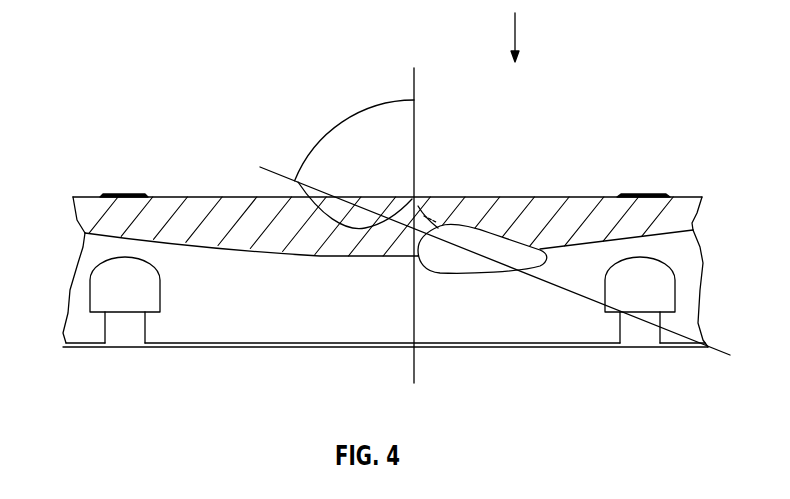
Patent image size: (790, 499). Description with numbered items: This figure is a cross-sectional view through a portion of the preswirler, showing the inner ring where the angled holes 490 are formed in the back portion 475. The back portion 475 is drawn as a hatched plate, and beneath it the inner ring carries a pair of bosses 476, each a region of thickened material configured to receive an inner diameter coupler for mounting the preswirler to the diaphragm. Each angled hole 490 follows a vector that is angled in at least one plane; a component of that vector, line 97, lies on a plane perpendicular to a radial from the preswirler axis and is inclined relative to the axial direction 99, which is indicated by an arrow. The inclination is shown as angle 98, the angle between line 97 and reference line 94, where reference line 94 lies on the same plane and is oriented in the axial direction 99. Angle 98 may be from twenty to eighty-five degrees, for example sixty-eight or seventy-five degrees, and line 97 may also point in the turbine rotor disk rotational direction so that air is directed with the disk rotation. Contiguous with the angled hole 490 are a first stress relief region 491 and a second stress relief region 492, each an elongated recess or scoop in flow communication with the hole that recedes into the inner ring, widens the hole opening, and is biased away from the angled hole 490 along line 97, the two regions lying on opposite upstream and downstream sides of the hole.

The reference line 94 is at (416, 82).
The line 97 is at (277, 170).
The angle 98 is at (343, 120).
The axial direction 99 is at (515, 33).
The back portion 475 is at (550, 200).
The boss 476 is at (100, 288).
The angled hole 490 is at (425, 220).
The first stress relief region 491 is at (470, 265).
The second stress relief region 492 is at (340, 197).